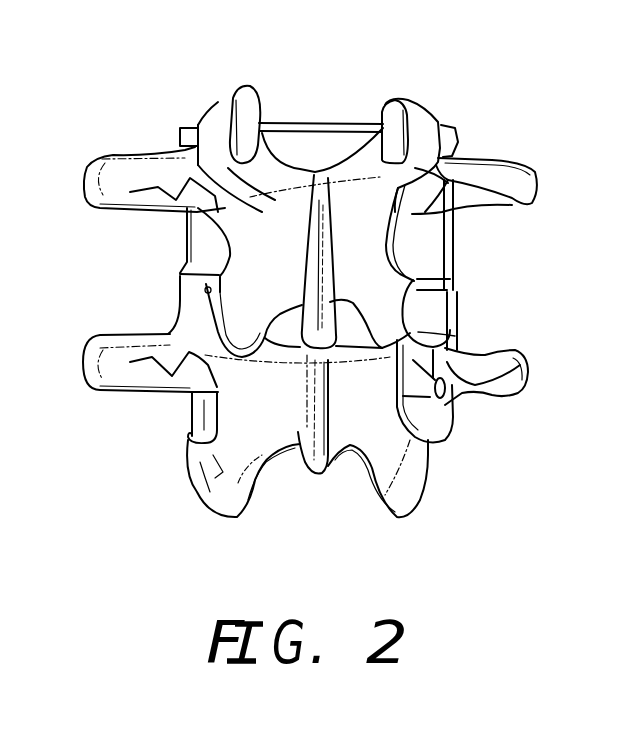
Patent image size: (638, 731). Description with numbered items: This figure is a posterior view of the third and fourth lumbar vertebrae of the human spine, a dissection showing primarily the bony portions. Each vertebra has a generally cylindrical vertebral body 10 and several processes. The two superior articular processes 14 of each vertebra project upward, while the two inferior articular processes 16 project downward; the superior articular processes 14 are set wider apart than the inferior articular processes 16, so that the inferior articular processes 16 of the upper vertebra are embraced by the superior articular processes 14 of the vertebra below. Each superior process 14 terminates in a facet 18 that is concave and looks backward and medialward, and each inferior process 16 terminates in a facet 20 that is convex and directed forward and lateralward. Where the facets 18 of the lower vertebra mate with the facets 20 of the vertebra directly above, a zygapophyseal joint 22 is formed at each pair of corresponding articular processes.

The vertebral body 10 is at (342, 146).
The superior articular processes 14 is at (195, 308).
The inferior articular processes 16 is at (195, 313).
The facet 18 is at (382, 118).
The facet 20 is at (418, 507).
The zygapophyseal joint 22 is at (417, 332).